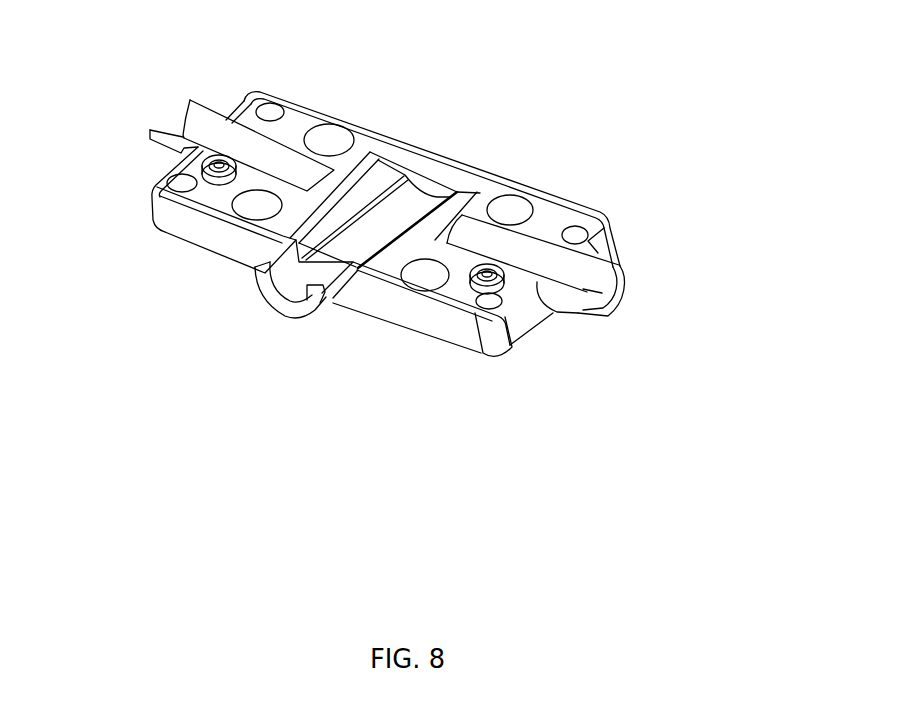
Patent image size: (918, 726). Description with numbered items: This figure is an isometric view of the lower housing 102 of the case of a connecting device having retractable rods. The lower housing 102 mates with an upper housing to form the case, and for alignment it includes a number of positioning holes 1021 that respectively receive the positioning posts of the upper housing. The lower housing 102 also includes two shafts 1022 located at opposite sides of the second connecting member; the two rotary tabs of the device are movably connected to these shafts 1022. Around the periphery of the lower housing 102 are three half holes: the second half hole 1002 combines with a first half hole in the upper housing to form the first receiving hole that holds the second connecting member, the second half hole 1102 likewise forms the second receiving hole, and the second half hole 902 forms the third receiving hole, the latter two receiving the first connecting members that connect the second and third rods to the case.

The lower housing 102 is at (373, 127).
The second half hole 902 is at (185, 132).
The positioning holes 1021 is at (520, 210).
The shafts 1022 is at (473, 290).
The second half hole 1002 is at (303, 280).
The second half hole 1102 is at (584, 289).